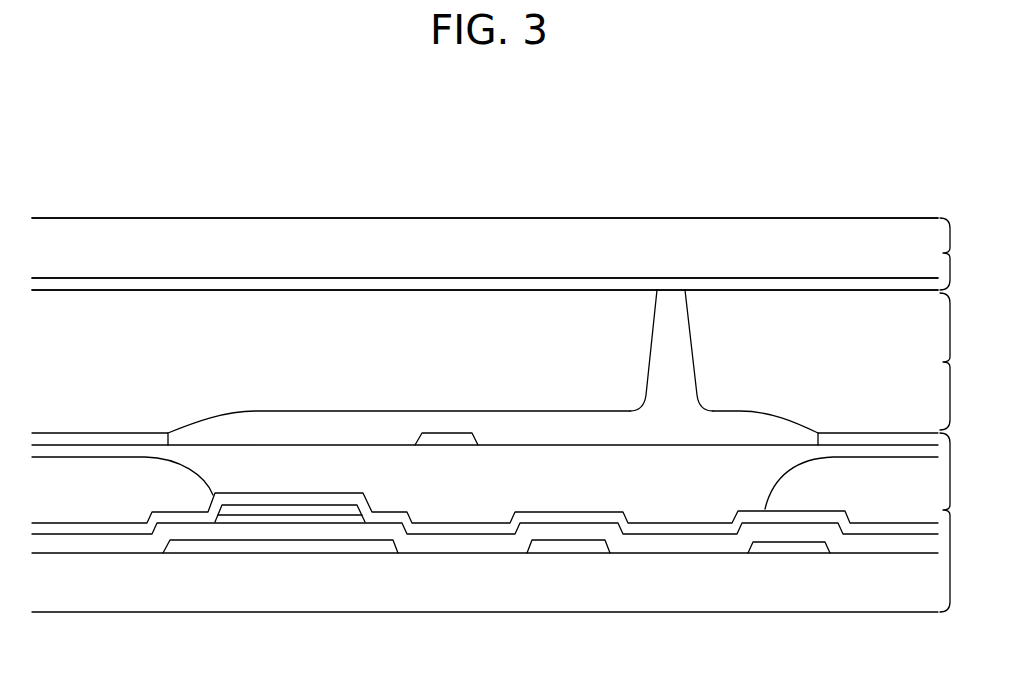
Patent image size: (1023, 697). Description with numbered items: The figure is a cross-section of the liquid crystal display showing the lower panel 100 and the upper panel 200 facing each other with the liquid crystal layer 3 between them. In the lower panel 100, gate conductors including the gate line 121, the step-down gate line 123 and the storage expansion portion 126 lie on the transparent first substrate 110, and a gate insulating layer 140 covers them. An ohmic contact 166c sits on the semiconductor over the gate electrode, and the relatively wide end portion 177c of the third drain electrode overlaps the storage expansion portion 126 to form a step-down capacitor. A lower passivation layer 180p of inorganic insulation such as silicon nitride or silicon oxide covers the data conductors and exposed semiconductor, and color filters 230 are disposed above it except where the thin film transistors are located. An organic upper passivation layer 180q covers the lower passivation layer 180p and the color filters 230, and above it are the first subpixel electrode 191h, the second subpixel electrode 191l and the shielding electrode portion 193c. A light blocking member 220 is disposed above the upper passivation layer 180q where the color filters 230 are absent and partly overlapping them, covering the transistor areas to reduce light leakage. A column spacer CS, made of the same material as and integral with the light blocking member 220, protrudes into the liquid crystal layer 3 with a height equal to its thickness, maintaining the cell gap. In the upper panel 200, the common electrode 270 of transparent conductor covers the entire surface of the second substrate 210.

The upper panel 200 is at (515, 254).
The second substrate 210 is at (527, 235).
The common electrode 270 is at (608, 285).
The liquid crystal layer 3 is at (506, 360).
The column spacer CS is at (680, 343).
The light blocking member 220 is at (580, 418).
The connecting member 193c is at (445, 440).
The first subpixel electrode 191h is at (118, 440).
The second subpixel electrode 191l is at (848, 440).
The color filter 230 is at (60, 480).
The lower panel 100 is at (515, 522).
The lower passivation layer 180p is at (436, 528).
The upper passivation layer 180q is at (485, 503).
The ohmic contact 166c is at (302, 520).
The relatively wide end portion 177c is at (253, 512).
The gate insulating layer 140 is at (658, 546).
The storage expansion portion 126 is at (355, 546).
The gate line 121 is at (568, 547).
The step-down gate line 123 is at (793, 548).
The first substrate 110 is at (723, 590).